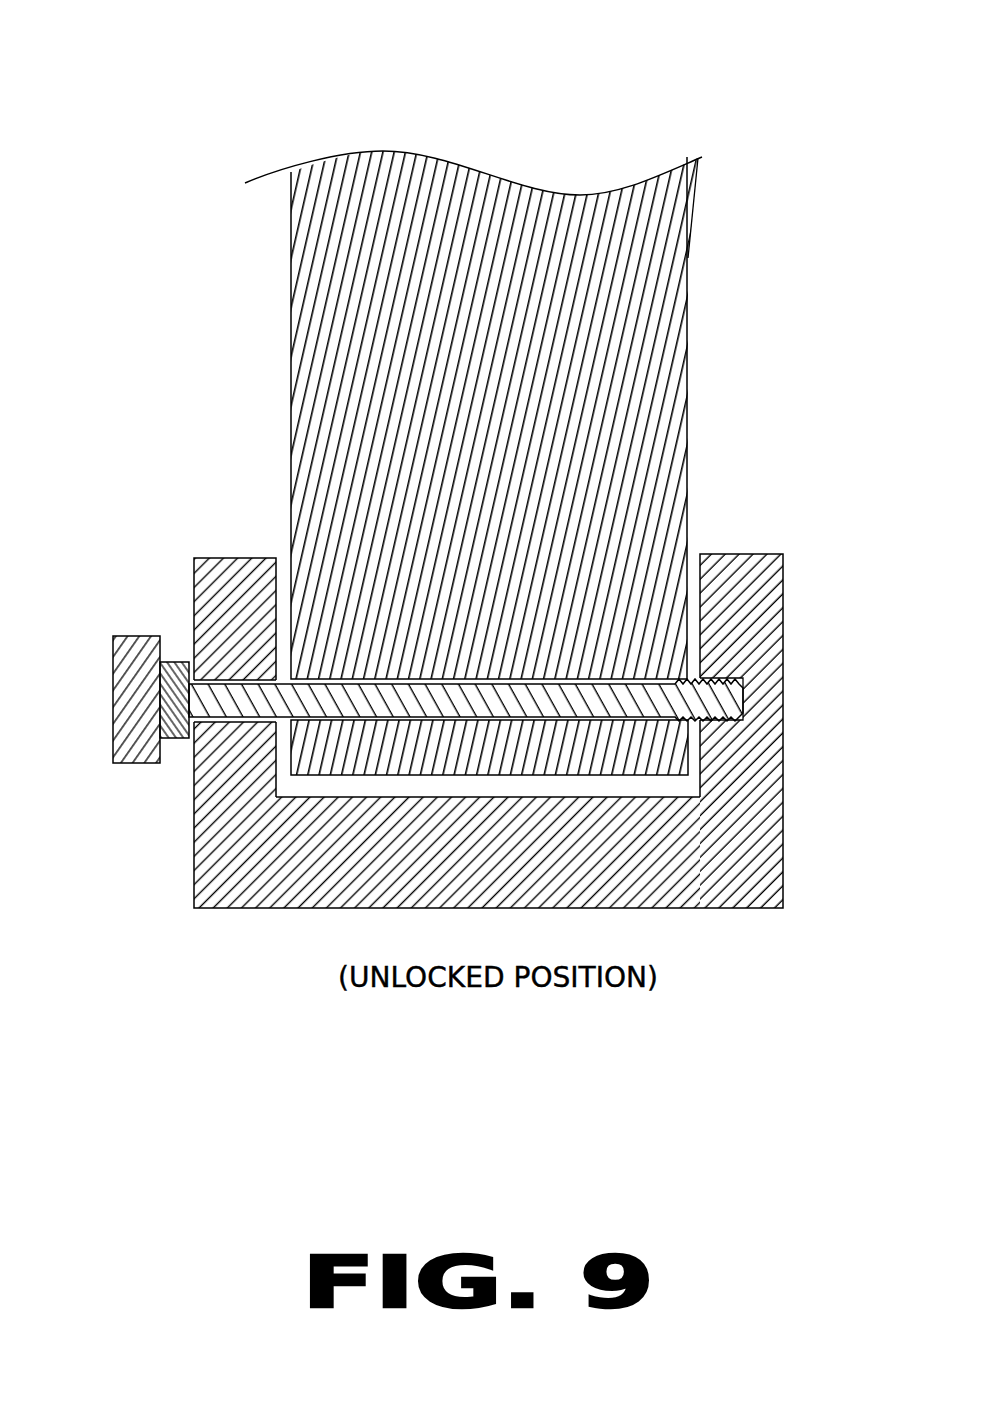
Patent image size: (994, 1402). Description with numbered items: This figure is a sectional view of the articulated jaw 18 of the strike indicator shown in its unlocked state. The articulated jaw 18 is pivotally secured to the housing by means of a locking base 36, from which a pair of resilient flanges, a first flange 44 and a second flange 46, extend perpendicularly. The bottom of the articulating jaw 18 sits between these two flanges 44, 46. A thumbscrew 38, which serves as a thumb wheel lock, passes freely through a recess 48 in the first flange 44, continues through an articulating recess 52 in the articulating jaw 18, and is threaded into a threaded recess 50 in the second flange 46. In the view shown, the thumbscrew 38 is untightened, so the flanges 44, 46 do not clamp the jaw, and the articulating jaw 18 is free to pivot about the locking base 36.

The articulated jaw 18 is at (457, 210).
The locking base 36 is at (295, 908).
The thumbscrew 38 is at (133, 637).
The first flange 44 is at (230, 557).
The second flange 46 is at (745, 553).
The recess 48 is at (245, 680).
The threaded recess 50 is at (722, 678).
The articulating recess 52 is at (550, 722).